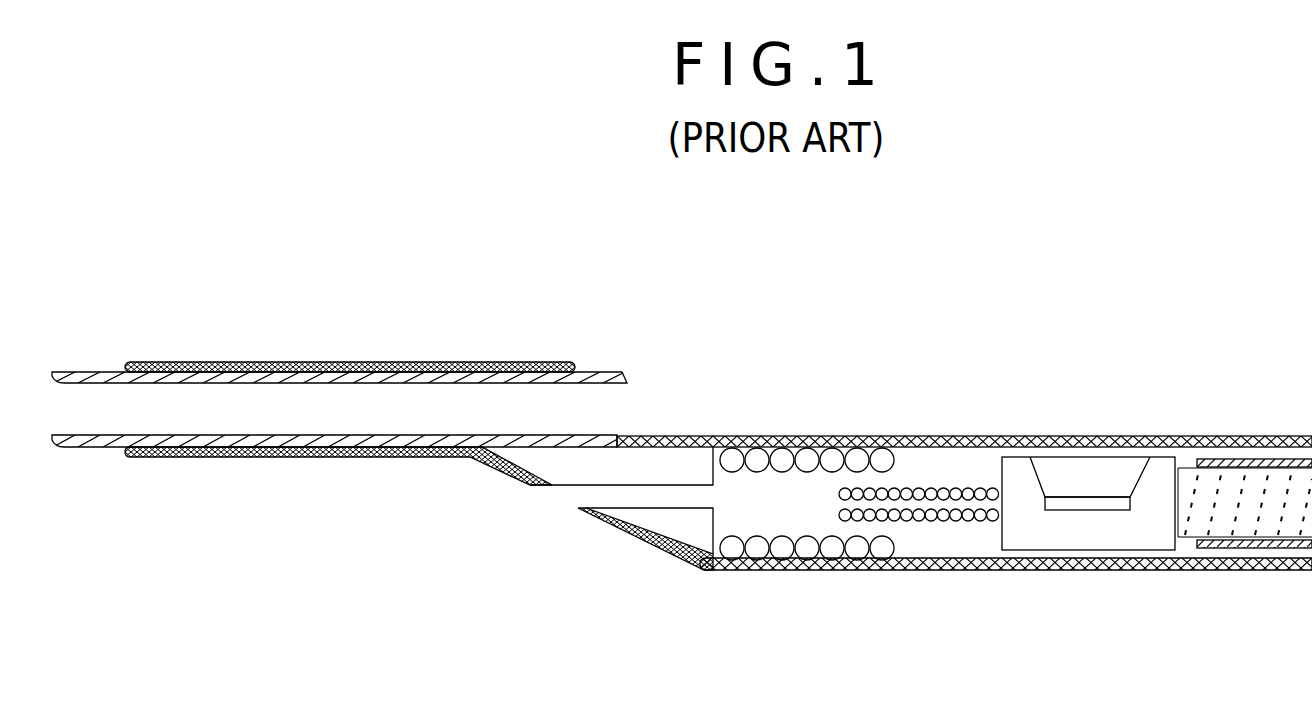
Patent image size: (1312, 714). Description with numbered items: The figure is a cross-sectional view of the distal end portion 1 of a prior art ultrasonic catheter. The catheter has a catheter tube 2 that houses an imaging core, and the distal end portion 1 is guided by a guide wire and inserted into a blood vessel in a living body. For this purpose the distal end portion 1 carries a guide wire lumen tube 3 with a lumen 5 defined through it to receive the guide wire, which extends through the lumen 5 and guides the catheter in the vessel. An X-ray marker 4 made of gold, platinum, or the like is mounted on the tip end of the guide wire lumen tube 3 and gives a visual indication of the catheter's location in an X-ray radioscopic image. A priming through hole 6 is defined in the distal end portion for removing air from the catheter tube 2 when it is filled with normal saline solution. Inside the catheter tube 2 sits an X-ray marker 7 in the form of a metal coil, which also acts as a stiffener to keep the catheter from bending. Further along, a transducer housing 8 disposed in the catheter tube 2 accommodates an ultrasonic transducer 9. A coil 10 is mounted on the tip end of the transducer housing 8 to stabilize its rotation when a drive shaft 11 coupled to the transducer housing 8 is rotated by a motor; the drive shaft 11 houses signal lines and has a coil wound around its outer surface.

The distal end portion 1 is at (979, 313).
The catheter tube 2 is at (1228, 436).
The guide wire lumen tube 3 is at (603, 372).
The X-ray marker 4 is at (176, 362).
The lumen 5 is at (618, 402).
The priming through hole 6 is at (573, 505).
The X-ray marker 7 is at (808, 457).
The transducer housing 8 is at (1020, 468).
The ultrasonic transducer 9 is at (1098, 502).
The coil 10 is at (916, 494).
The drive shaft 11 is at (1267, 513).